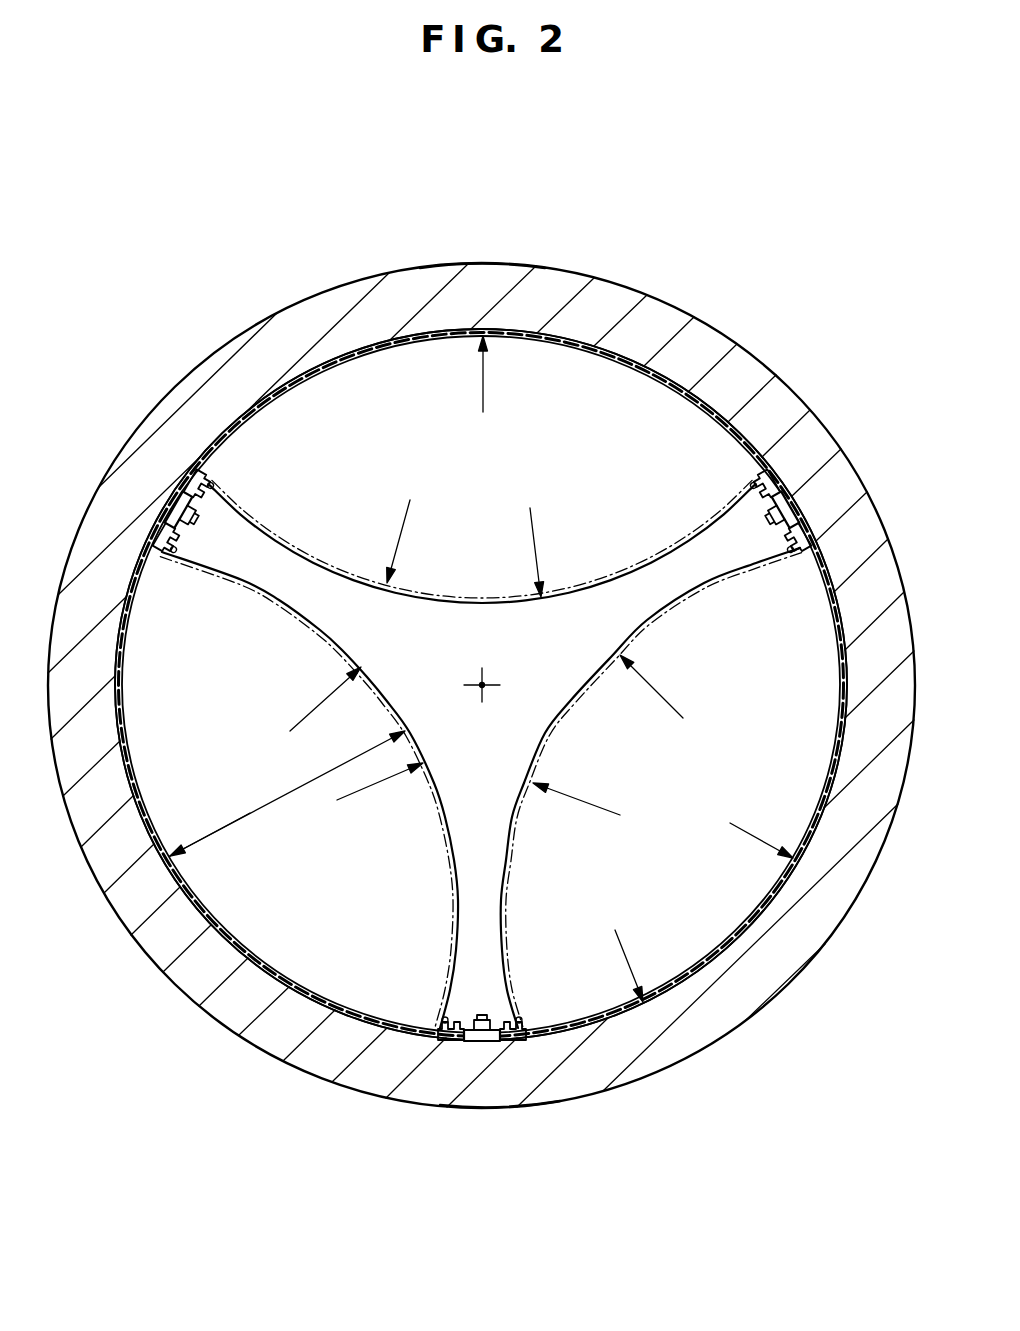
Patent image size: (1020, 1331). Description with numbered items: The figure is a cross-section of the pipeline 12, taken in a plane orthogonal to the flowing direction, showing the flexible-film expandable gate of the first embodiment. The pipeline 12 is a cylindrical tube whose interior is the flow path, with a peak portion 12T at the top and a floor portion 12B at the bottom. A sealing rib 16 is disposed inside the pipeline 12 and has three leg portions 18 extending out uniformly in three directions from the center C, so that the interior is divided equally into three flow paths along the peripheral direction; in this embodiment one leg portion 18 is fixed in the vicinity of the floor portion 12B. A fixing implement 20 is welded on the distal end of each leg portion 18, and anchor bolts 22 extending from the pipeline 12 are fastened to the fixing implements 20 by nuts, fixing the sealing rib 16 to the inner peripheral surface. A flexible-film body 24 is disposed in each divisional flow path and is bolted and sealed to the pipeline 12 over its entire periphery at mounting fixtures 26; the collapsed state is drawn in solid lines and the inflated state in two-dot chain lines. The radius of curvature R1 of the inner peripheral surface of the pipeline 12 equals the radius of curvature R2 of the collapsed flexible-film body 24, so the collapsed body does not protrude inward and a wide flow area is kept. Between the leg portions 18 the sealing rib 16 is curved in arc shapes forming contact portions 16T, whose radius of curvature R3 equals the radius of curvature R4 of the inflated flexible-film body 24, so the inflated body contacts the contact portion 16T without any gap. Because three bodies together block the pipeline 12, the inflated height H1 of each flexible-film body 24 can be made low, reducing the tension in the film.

The pipeline 12 is at (296, 1070).
The peak portion 12T is at (480, 262).
The floor portion 12B is at (560, 1093).
The sealing rib 16 is at (262, 596).
The contact portion 16T is at (343, 574).
The leg portion 18 is at (284, 550).
The fixing implement 20 is at (170, 512).
The anchor bolt 22 is at (180, 518).
The flexible-film body 24 is at (598, 348).
The mounting fixture 26 is at (203, 491).
The center C is at (482, 692).
The inflated height H1 is at (267, 806).
The radius of curvature of the inner peripheral surface R1 is at (618, 932).
The radius of curvature of the flexible-film body in the collapsed state R2 is at (483, 378).
The radius of curvature of the contact portion R3 is at (533, 525).
The radius of curvature of the flexible-film body in the inflated state R4 is at (406, 514).